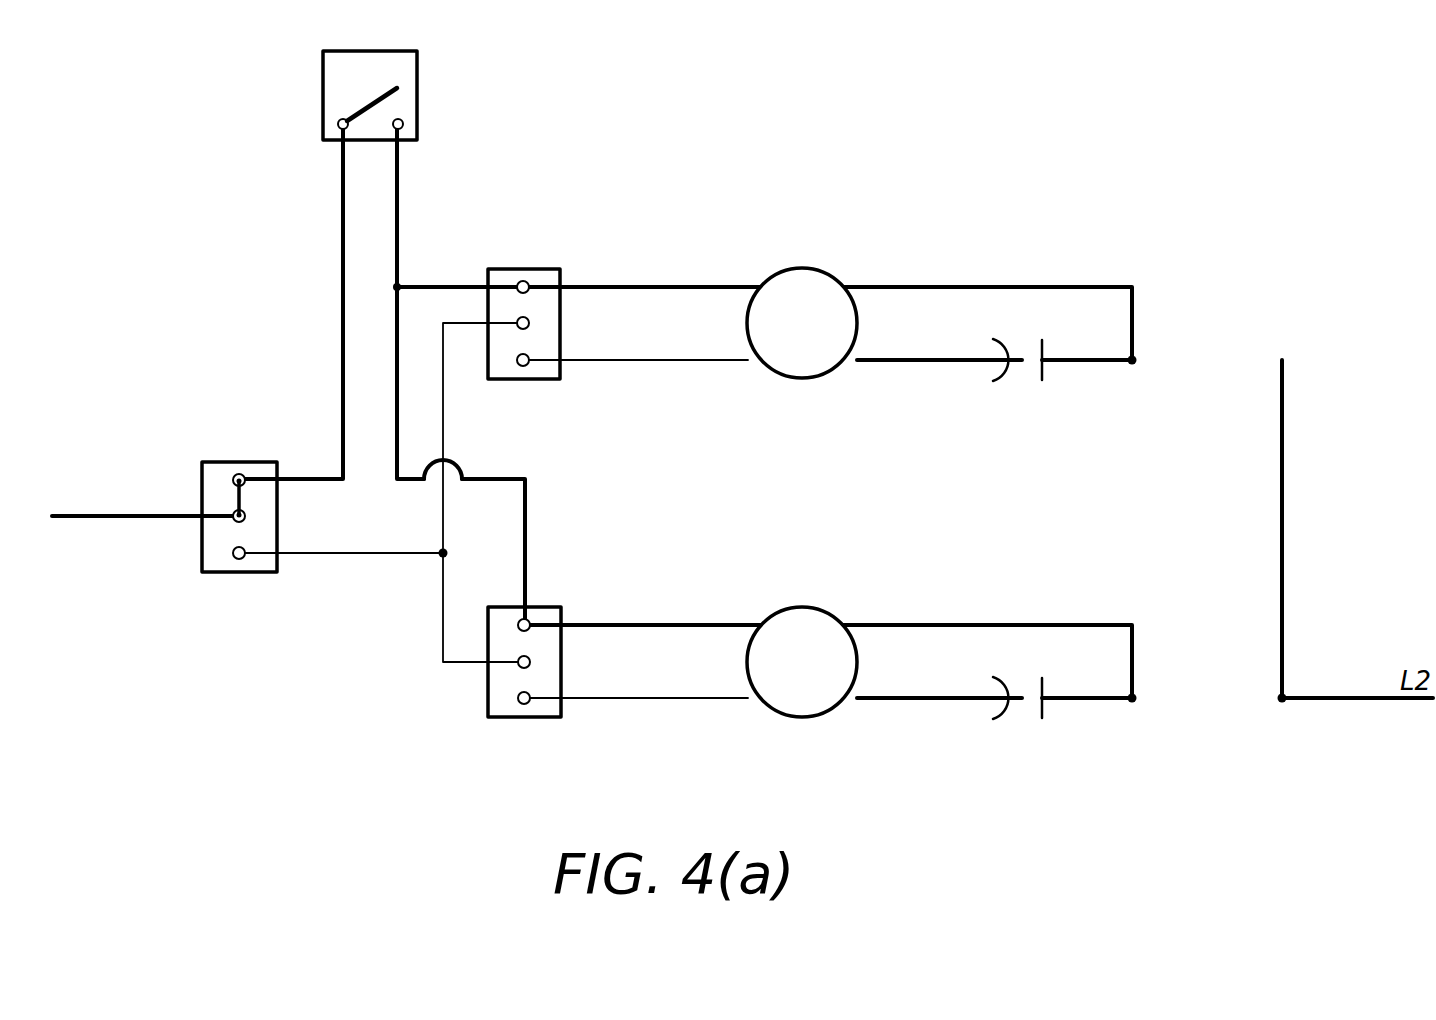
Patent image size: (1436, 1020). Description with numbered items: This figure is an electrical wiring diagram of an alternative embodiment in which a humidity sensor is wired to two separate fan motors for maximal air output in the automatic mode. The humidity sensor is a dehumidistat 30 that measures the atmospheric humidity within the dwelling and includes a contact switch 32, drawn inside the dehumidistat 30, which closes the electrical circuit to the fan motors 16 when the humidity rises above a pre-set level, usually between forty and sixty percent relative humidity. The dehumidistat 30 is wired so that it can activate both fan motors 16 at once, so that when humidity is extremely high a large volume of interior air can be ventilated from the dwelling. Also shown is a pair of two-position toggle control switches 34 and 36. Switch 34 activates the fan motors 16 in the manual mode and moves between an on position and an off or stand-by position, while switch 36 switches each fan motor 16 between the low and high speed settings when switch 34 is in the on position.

The fan motor 16 is at (786, 472).
The dehumidistat 30 is at (330, 90).
The contact switch 32 is at (421, 93).
The two-position toggle control switch 34 is at (220, 516).
The two-position toggle control switch 36 is at (518, 490).